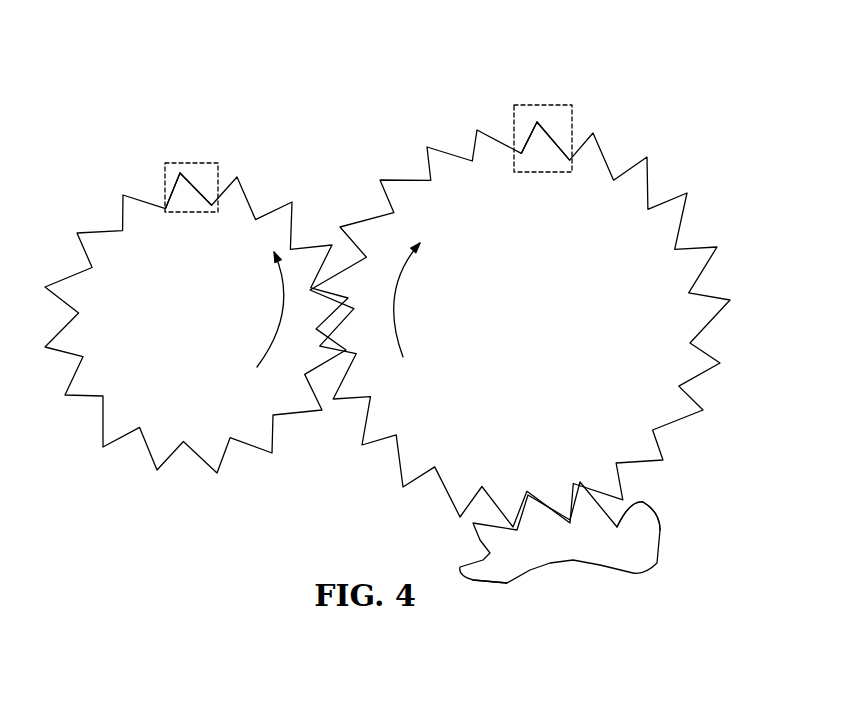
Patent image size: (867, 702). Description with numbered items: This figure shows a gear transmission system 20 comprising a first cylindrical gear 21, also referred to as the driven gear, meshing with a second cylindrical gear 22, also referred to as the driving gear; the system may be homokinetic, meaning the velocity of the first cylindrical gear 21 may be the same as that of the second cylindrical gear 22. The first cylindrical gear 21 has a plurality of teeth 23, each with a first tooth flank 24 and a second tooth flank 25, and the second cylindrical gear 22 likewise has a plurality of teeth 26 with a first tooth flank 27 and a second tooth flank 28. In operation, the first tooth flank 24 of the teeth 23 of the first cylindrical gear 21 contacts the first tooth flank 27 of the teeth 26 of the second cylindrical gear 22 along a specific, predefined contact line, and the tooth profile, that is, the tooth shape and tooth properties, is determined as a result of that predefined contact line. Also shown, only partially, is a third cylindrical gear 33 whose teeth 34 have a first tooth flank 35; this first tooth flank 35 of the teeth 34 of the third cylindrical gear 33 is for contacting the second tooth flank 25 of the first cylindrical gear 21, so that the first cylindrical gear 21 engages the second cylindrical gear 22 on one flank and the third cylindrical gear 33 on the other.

The gear transmission system 20 is at (213, 62).
The first cylindrical gear 21 is at (657, 403).
The second cylindrical gear 22 is at (130, 385).
The teeth 23 is at (587, 103).
The first tooth flank 24 is at (565, 148).
The second tooth flank 25 is at (522, 152).
The teeth 26 is at (189, 160).
The first tooth flank 27 is at (197, 188).
The second tooth flank 28 is at (167, 190).
The third cylindrical gear 33 is at (528, 560).
The teeth 34 is at (670, 538).
The first tooth flank 35 is at (627, 497).